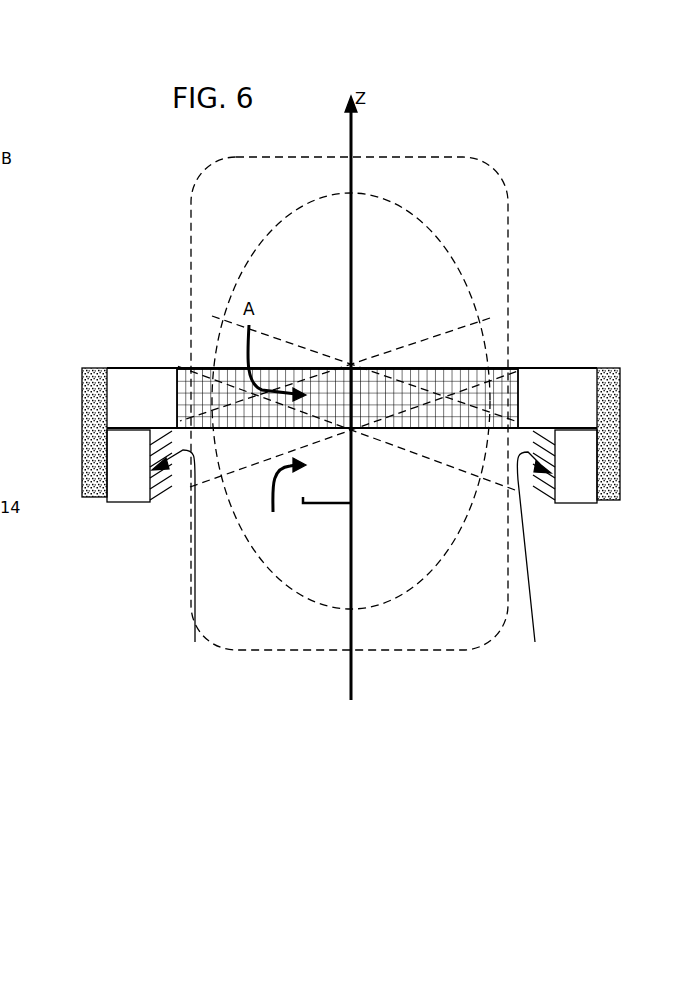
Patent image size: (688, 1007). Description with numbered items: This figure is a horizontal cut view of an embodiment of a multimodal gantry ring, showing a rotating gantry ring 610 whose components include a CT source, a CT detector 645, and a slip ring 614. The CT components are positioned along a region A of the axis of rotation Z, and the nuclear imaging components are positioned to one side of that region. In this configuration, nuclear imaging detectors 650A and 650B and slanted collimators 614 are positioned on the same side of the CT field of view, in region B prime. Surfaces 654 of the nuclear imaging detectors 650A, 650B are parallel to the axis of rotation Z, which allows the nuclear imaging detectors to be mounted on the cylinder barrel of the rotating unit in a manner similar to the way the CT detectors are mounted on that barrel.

The rotating gantry ring 610 is at (452, 37).
The CT detector 645 is at (517, 372).
The slanted collimators 614 is at (608, 420).
The nuclear imaging detector 650A is at (133, 478).
The nuclear imaging detector 650B is at (575, 488).
The surfaces of the nuclear imaging detectors 654 is at (352, 564).